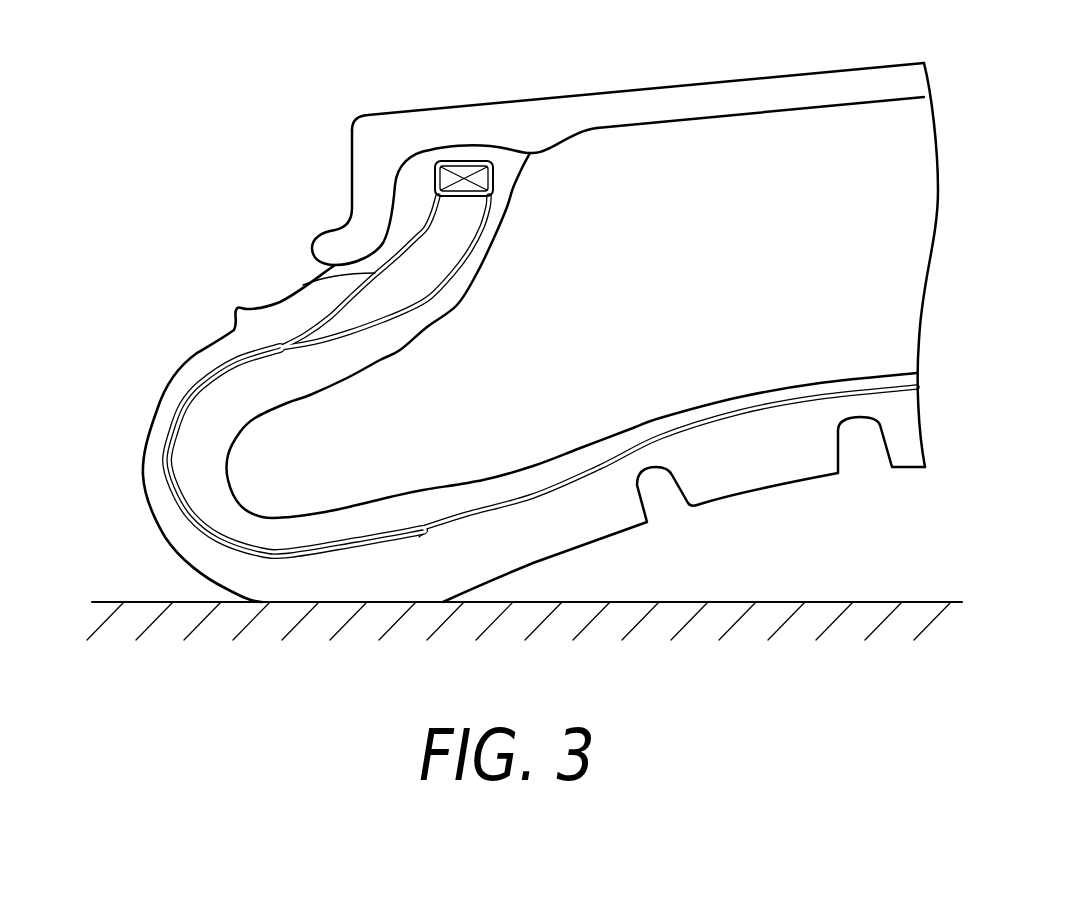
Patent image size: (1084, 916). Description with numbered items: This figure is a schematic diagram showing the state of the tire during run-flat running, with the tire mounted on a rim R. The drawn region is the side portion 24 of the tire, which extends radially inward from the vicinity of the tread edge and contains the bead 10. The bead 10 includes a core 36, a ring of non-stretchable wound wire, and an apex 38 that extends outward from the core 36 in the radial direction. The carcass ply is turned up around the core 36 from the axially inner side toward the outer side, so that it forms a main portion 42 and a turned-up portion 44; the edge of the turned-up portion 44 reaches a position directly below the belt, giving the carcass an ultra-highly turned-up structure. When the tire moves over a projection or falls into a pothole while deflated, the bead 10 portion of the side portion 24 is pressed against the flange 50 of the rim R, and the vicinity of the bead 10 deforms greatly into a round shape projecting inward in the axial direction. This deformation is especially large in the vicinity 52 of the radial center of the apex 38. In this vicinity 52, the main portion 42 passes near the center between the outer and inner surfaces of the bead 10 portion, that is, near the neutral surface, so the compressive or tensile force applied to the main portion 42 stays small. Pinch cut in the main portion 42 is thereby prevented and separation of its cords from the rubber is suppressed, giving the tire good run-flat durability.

The rim R is at (543, 113).
The bead 10 is at (589, 165).
The side portion 24 is at (133, 406).
The core 36 is at (486, 180).
The apex 38 is at (468, 224).
The main portion 42 is at (215, 378).
The turned-up portion 44 is at (300, 287).
The flange 50 is at (337, 240).
The vicinity of the center of the apex 52 is at (447, 257).